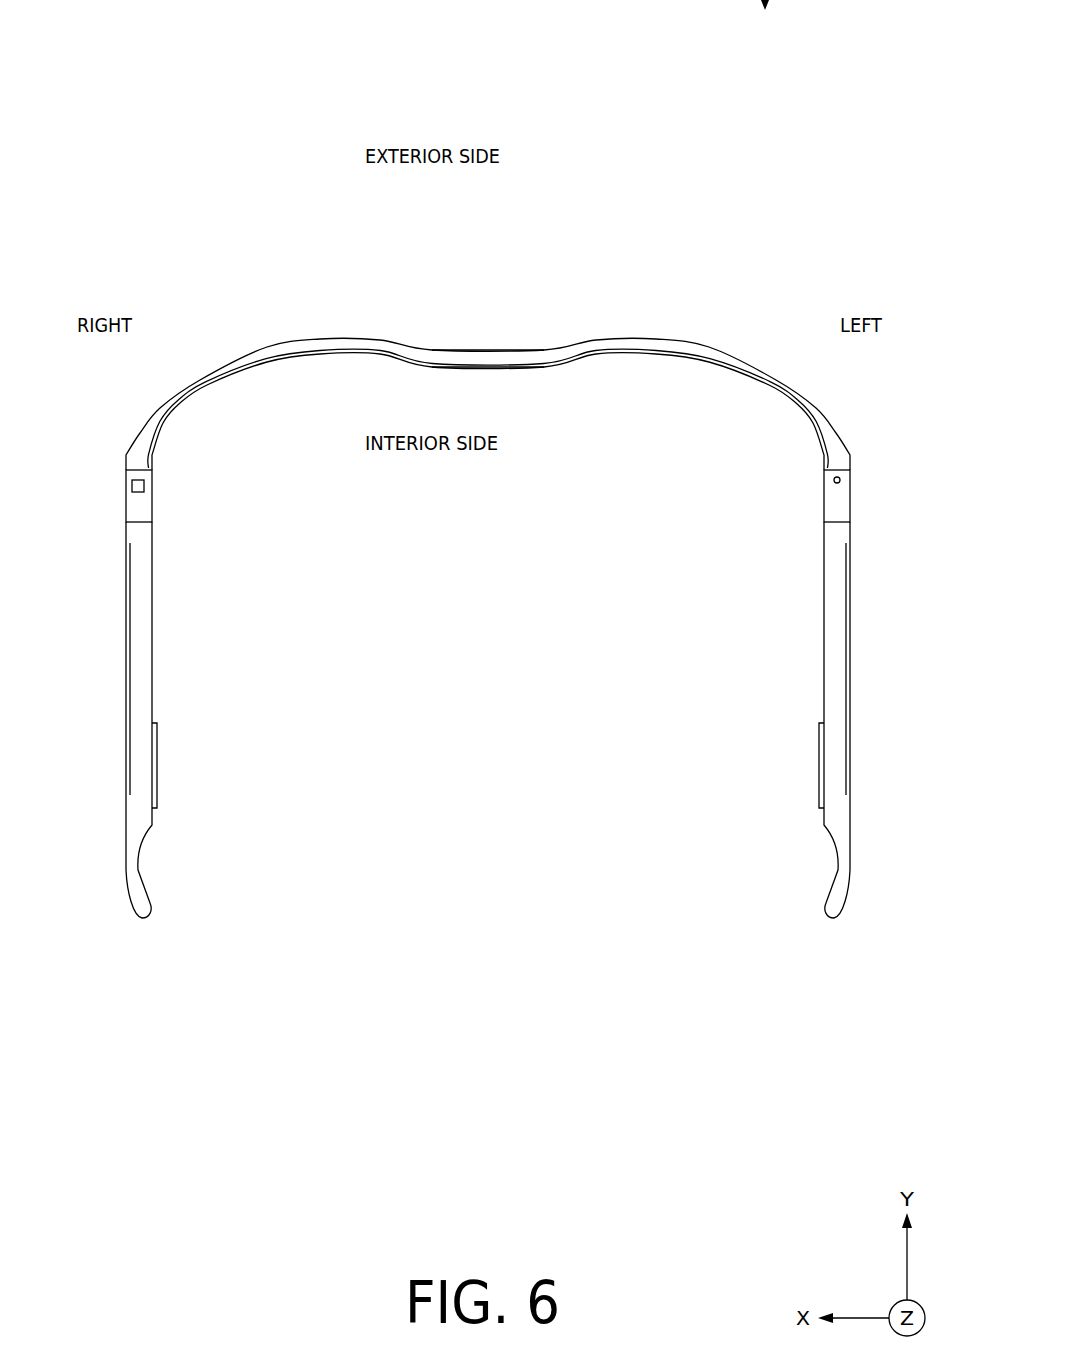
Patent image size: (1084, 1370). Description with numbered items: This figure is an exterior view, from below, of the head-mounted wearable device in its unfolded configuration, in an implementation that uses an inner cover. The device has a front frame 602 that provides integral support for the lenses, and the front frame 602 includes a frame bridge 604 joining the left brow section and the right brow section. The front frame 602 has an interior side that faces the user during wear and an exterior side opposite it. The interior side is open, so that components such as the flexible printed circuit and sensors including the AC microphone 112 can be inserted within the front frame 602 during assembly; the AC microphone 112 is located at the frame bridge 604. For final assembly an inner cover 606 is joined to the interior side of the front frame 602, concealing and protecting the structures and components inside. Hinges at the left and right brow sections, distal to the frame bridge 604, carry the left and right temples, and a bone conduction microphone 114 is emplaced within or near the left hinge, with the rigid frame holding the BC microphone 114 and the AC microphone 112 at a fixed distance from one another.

The AC microphone 112 is at (812, 488).
The bone conduction (BC) microphone 114 is at (838, 818).
The front frame 602 is at (300, 338).
The frame bridge 604 is at (541, 308).
The inner cover 606 is at (758, 390).